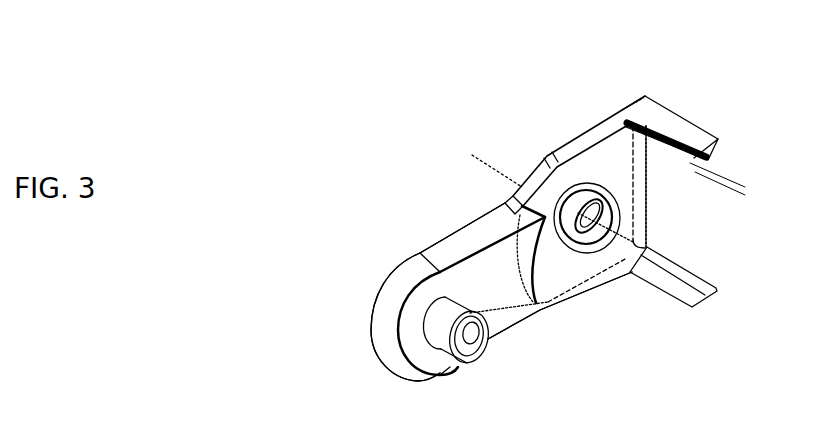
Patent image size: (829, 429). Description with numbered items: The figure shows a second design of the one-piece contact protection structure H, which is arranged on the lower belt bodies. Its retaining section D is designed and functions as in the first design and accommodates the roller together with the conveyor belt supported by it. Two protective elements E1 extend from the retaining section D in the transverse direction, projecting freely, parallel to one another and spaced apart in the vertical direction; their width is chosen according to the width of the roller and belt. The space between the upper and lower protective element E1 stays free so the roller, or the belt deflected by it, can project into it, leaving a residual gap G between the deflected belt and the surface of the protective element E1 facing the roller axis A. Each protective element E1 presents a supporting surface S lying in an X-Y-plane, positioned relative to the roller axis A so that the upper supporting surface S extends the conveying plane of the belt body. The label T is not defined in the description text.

The contact protection structure H is at (400, 172).
The tab T is at (400, 172).
The roller axis A is at (497, 170).
The supporting surface S is at (669, 125).
The protective element E1 is at (705, 137).
The residual gap G is at (712, 195).
The retaining section D is at (490, 297).